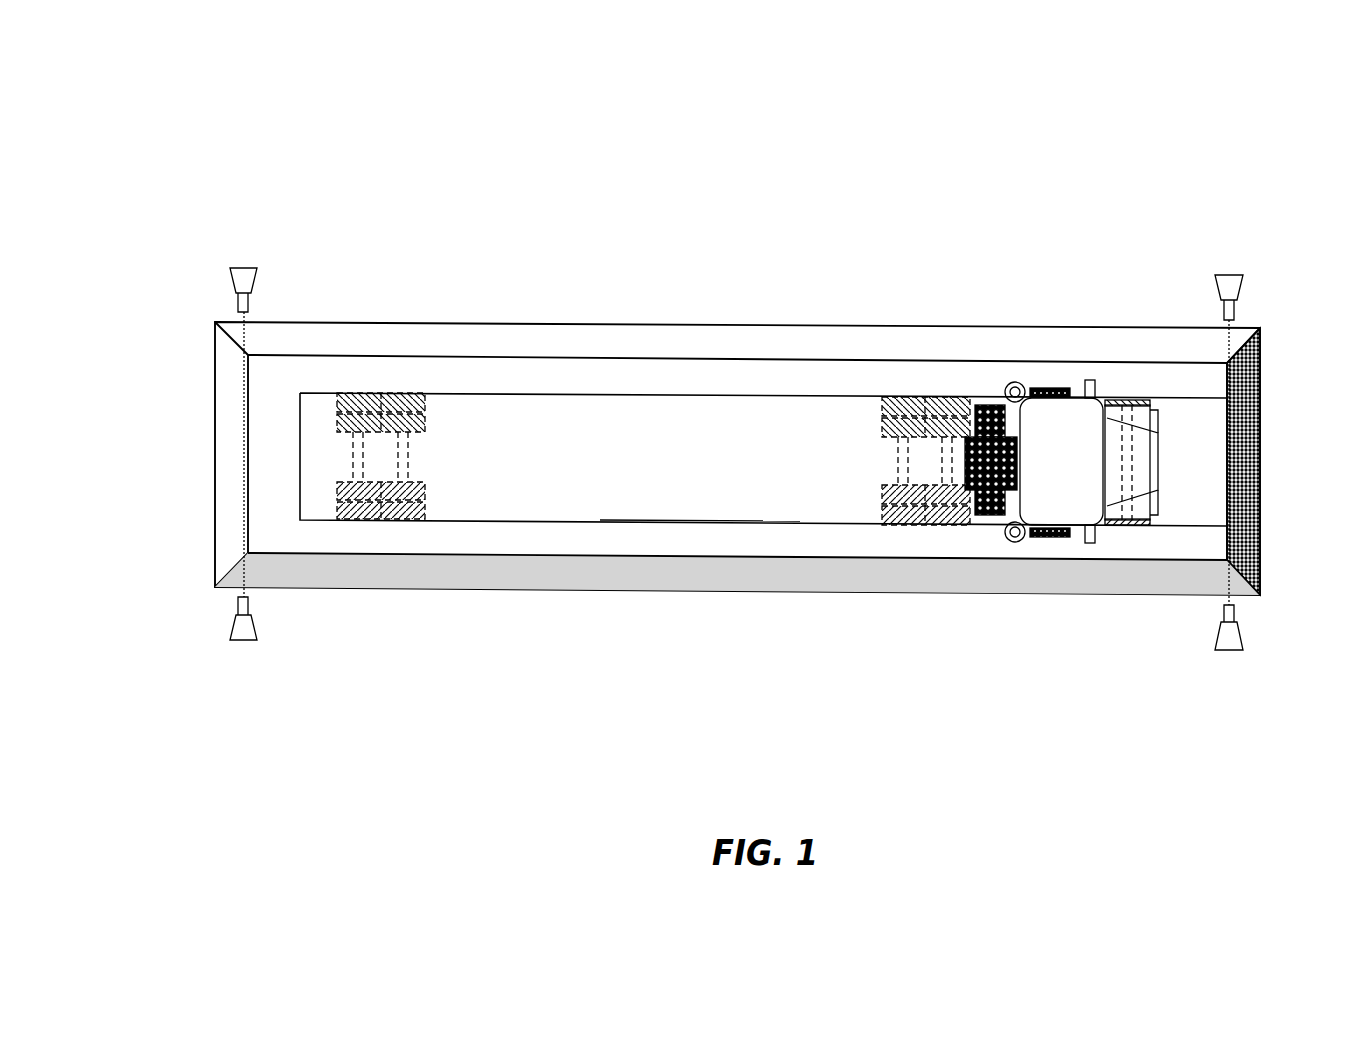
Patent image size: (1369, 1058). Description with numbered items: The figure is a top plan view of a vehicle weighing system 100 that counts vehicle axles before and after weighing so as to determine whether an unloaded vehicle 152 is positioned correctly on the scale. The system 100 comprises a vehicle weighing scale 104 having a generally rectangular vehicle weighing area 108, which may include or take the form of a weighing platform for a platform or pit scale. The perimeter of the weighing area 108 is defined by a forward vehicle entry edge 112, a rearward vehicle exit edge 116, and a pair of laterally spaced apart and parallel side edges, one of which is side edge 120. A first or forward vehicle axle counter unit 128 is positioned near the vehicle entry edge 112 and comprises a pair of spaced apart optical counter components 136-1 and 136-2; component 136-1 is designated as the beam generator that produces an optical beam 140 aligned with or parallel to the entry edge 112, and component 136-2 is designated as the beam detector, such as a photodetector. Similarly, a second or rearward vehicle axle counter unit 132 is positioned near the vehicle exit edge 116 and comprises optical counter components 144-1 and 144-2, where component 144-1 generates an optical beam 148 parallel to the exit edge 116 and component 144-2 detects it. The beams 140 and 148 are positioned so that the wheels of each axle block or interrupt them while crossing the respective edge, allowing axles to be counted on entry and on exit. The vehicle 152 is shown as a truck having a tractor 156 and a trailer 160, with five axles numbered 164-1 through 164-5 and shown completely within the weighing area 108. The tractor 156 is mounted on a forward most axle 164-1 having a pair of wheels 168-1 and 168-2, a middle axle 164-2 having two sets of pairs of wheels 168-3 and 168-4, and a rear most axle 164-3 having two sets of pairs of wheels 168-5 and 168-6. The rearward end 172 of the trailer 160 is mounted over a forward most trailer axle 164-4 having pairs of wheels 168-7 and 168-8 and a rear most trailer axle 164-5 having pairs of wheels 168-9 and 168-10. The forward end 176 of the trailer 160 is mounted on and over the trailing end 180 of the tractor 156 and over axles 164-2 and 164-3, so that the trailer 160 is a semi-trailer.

The vehicle weighing system 100 is at (382, 204).
The vehicle weighing scale 104 is at (519, 304).
The vehicle weighing area 108 is at (814, 376).
The vehicle entry edge 112 is at (247, 496).
The vehicle exit edge 116 is at (622, 357).
The side edge 120 is at (597, 557).
The first vehicle axle counter unit 128 is at (209, 268).
The second vehicle axle counter unit 132 is at (1271, 292).
The optical counter component 136-1 is at (245, 274).
The optical counter component 136-2 is at (239, 636).
The optical beam 140 is at (239, 425).
The optical counter component 144-1 is at (1228, 282).
The optical counter component 144-2 is at (1230, 652).
The optical beam 148 is at (1236, 467).
The unloaded vehicle 152 is at (697, 543).
The tractor 156 is at (1003, 556).
The trailer 160 is at (546, 543).
The forward most axle 164-1 is at (1127, 535).
The middle axle 164-2 is at (944, 393).
The rear most axle 164-3 is at (902, 534).
The forward most axle 164-4 is at (404, 391).
The rear most axle 164-5 is at (358, 528).
The wheel 168-1 is at (1130, 403).
The wheel 168-2 is at (1113, 528).
The pair of wheels 168-3 is at (965, 410).
The pair of wheels 168-4 is at (947, 508).
The pair of wheels 168-5 is at (907, 410).
The pair of wheels 168-6 is at (897, 508).
The pair of wheels 168-7 is at (408, 413).
The eighth contact layer 168-8 is at (400, 503).
The pair of wheels 168-9 is at (353, 503).
The pair of wheels 168-10 is at (357, 417).
The rearward end 172 is at (291, 387).
The forward end 176 is at (918, 466).
The trailing end 180 is at (1019, 398).